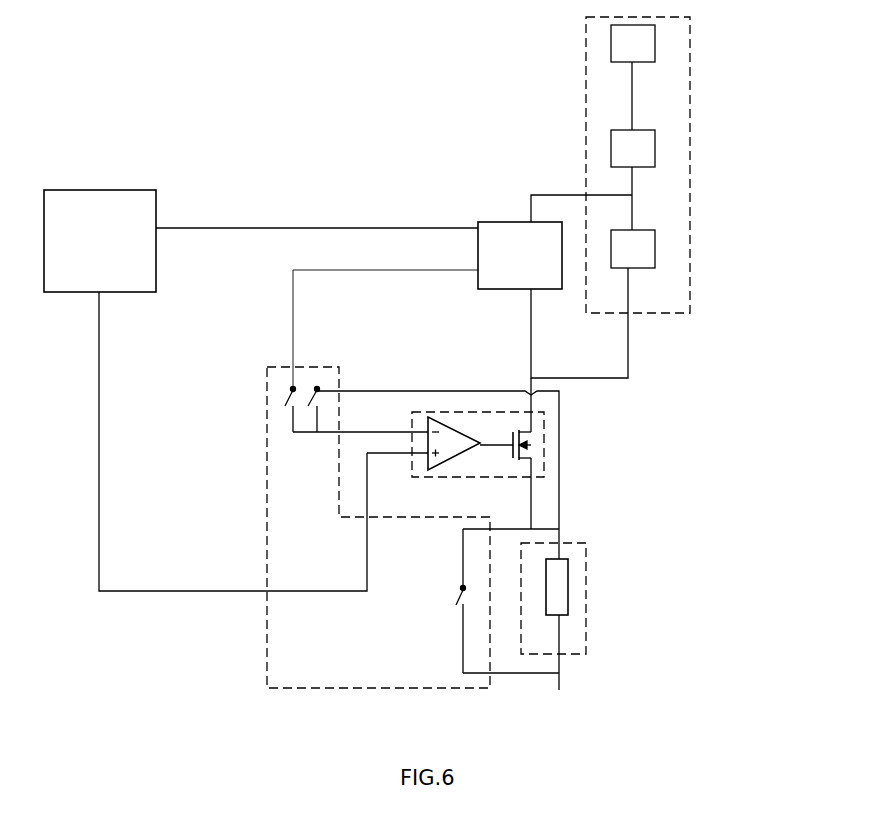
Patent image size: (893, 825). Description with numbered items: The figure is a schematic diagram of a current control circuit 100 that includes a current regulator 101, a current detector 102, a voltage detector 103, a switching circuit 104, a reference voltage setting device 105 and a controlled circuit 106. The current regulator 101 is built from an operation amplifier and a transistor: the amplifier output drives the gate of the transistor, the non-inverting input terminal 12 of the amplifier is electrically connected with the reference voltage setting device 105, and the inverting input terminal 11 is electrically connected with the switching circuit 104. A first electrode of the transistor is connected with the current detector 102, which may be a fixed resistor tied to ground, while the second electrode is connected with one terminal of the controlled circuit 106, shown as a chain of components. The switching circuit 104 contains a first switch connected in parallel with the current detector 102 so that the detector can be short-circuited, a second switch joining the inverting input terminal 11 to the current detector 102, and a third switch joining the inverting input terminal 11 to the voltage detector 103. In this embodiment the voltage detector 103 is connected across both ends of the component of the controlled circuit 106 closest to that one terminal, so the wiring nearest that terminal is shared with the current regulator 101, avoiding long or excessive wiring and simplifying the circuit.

The current control circuit 100 is at (139, 25).
The current regulator 101 is at (545, 449).
The current detector 102 is at (586, 590).
The voltage detector 103 is at (478, 228).
The switching circuit 104 is at (266, 462).
The reference voltage setting device 105 is at (121, 191).
The controlled circuit 106 is at (690, 150).
The inverting input terminal 11 is at (360, 421).
The non-inverting input terminal 12 is at (397, 468).